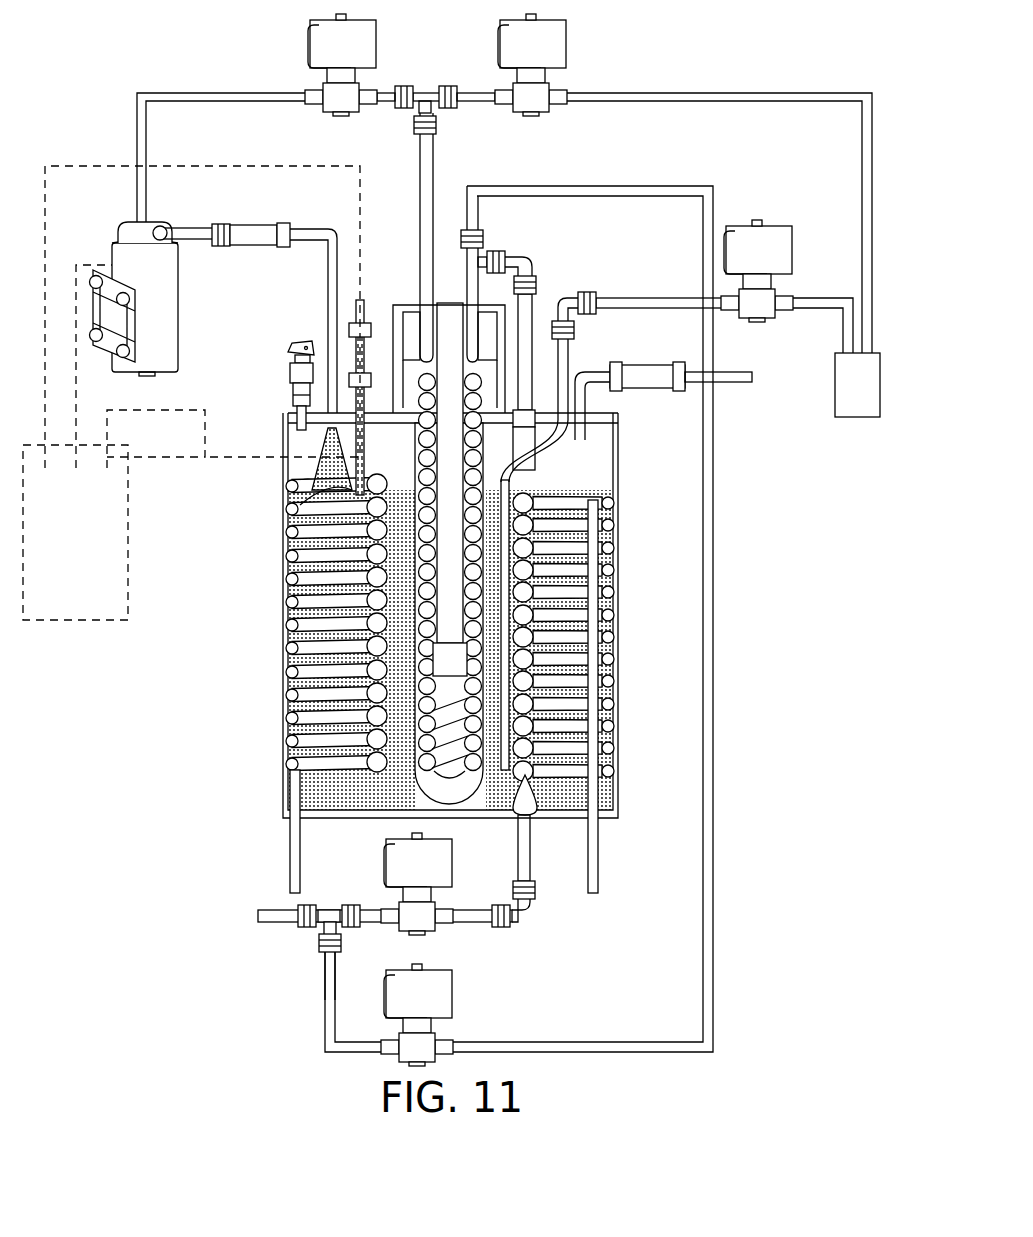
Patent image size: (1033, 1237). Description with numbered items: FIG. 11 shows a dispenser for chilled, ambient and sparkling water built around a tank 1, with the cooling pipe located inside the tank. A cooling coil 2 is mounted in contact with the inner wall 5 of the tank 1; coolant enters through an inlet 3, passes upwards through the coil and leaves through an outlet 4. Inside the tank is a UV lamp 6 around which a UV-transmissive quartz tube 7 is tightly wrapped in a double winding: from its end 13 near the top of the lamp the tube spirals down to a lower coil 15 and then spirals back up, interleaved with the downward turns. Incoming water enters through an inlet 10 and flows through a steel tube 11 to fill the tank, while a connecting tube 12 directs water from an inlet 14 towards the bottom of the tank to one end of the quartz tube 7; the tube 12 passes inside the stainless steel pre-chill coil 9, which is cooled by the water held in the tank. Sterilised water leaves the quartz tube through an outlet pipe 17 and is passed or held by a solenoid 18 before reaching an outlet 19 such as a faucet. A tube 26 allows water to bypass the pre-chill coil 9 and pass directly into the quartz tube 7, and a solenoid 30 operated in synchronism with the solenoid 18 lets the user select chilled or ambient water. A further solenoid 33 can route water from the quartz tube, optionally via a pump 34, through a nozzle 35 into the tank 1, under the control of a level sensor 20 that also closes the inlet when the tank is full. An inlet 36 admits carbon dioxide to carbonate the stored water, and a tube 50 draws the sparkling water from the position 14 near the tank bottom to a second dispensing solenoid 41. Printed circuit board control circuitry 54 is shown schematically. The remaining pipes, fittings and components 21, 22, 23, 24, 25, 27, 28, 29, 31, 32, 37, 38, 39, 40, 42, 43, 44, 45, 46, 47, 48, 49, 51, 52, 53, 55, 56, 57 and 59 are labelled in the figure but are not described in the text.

The tank 1 is at (283, 440).
The cooling coil 2 is at (290, 695).
The inlet 3 is at (290, 868).
The outlet 4 is at (598, 875).
The inner wall 5 is at (285, 470).
The UV lamp 6 is at (449, 320).
The quartz tube 7 is at (568, 360).
The stainless steel water pipe 9 is at (300, 492).
The inlet 10 is at (531, 850).
The steel tube 11 is at (545, 460).
The connecting tube 12 is at (535, 300).
The end 13 is at (437, 290).
The inlet 14 is at (515, 800).
The lower coil 15 is at (415, 790).
The outlet pipe 17 is at (420, 250).
The solenoid 18 is at (425, 88).
The outlet 19 is at (470, 92).
The level sensor 20 is at (570, 32).
The pipe 21 is at (825, 92).
The pipe 22 is at (392, 90).
The solenoid valve 23 is at (308, 33).
The pipe 24 is at (200, 92).
The sensor 25 is at (356, 345).
The tube 26 is at (574, 335).
The solenoid valve 27 is at (760, 227).
The pipe 28 is at (815, 298).
The pump 29 is at (858, 417).
The solenoid 30 is at (430, 928).
The pipe 31 is at (368, 925).
The pipe 32 is at (586, 430).
The further solenoid 33 is at (586, 388).
The pump 34 is at (650, 365).
The nozzle 35 is at (740, 382).
The inlet for a source of carbonation 36 is at (590, 292).
The pipe 37 is at (660, 297).
The elbow 38 is at (530, 252).
The coupling 39 is at (494, 252).
The pipe 40 is at (467, 225).
The second dispensing solenoid 41 is at (125, 222).
The outlet 42 is at (205, 244).
The sensor 43 is at (255, 248).
The pipe 44 is at (282, 229).
The pipe 45 is at (297, 415).
The relief valve 46 is at (290, 372).
The nozzle 47 is at (320, 488).
The fitting 48 is at (293, 392).
The fitting 49 is at (350, 378).
The tube 50 is at (350, 325).
The housing 51 is at (240, 165).
The bracket 52 is at (452, 978).
The controller 53 is at (165, 416).
The control circuitry (PCB) 54 is at (128, 607).
The coupling 55 is at (345, 908).
The coupling 56 is at (278, 922).
The pipe 57 is at (325, 1012).
The pipe 59 is at (540, 1042).